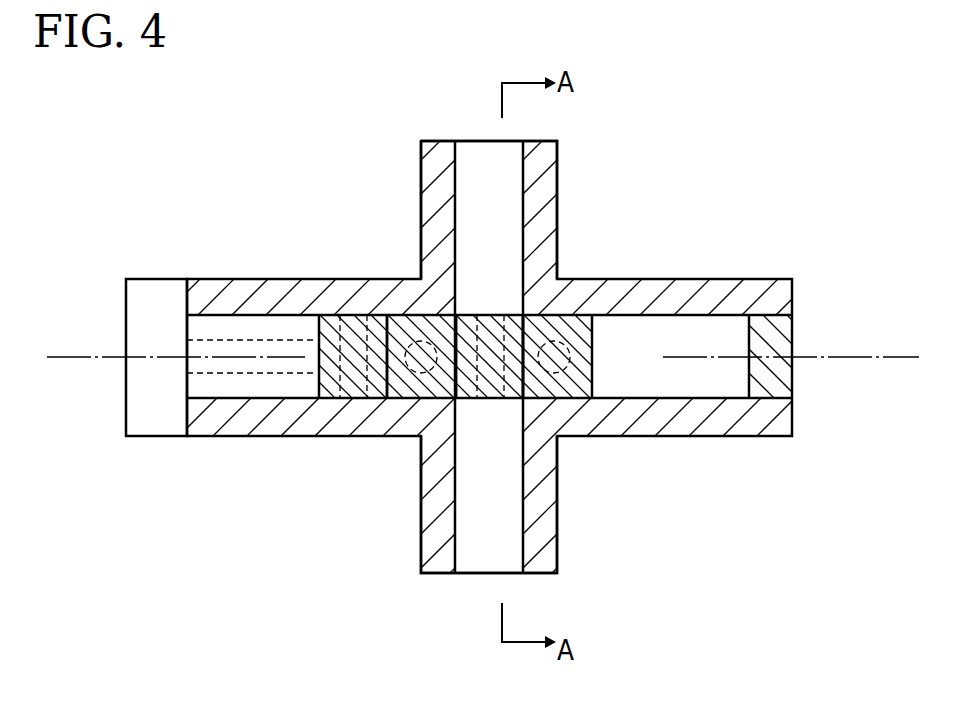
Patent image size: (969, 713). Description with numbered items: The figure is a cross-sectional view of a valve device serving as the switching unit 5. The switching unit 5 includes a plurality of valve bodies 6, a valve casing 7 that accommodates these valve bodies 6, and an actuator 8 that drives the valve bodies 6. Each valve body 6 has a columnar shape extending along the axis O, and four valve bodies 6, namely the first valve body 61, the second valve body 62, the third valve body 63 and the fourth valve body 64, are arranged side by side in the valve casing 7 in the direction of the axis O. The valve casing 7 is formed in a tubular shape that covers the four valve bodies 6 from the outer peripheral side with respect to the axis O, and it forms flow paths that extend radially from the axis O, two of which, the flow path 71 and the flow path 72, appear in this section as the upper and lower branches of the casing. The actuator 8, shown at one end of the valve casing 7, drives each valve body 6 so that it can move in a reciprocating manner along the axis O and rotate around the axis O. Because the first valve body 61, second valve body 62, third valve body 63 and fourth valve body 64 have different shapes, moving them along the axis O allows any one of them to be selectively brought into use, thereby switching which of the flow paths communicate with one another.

The switching unit 5 is at (103, 130).
The valve body 6 is at (451, 424).
The first valve body 61 is at (323, 394).
The second valve body 62 is at (403, 390).
The third valve body 63 is at (492, 387).
The fourth valve body 64 is at (578, 387).
The valve casing 7 is at (283, 285).
The flow path 71 is at (457, 173).
The flow path 72 is at (457, 542).
The actuator 8 is at (148, 425).
The axis O is at (55, 357).